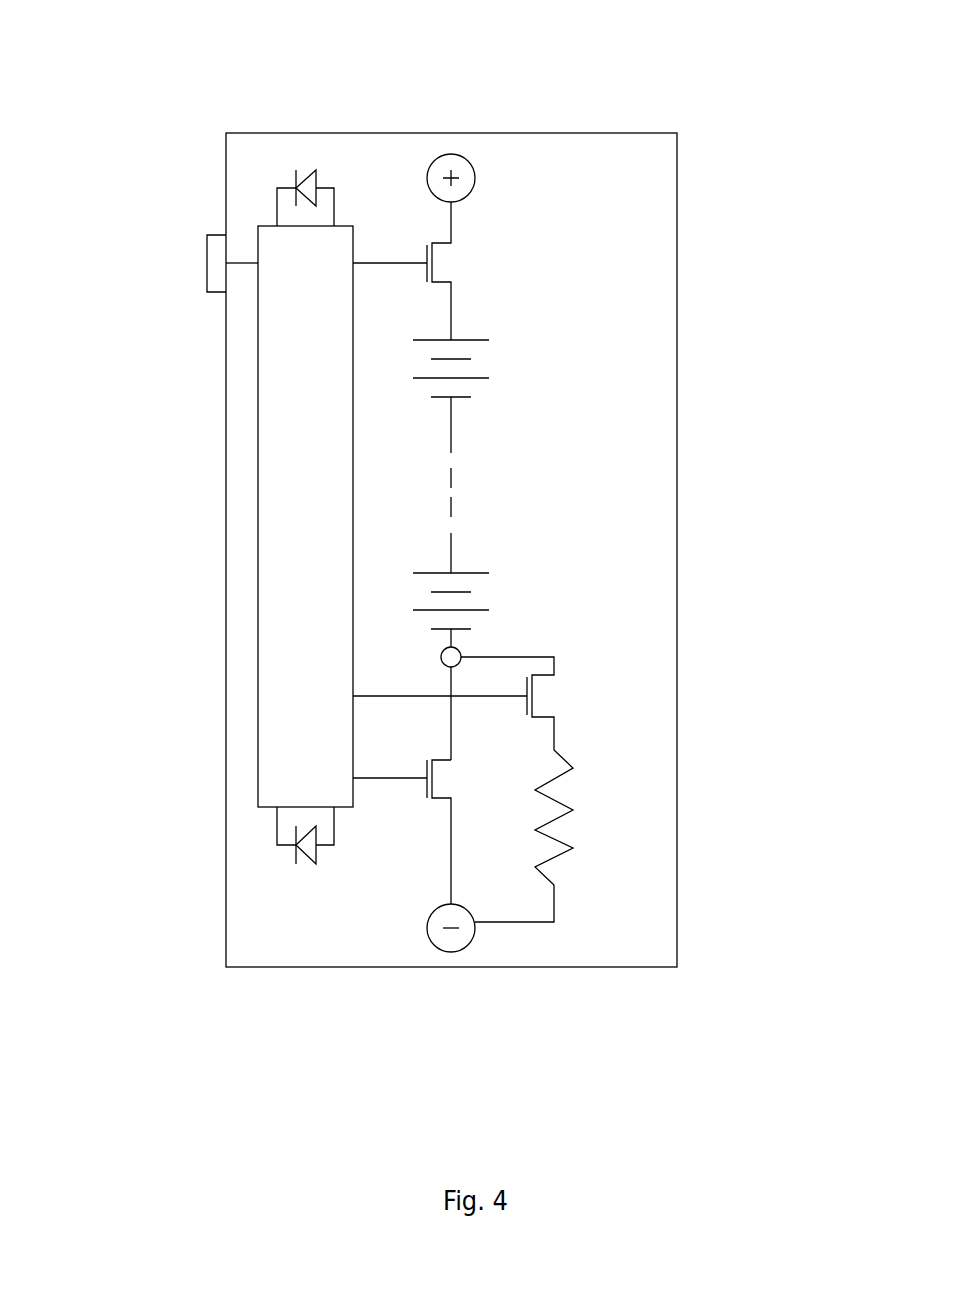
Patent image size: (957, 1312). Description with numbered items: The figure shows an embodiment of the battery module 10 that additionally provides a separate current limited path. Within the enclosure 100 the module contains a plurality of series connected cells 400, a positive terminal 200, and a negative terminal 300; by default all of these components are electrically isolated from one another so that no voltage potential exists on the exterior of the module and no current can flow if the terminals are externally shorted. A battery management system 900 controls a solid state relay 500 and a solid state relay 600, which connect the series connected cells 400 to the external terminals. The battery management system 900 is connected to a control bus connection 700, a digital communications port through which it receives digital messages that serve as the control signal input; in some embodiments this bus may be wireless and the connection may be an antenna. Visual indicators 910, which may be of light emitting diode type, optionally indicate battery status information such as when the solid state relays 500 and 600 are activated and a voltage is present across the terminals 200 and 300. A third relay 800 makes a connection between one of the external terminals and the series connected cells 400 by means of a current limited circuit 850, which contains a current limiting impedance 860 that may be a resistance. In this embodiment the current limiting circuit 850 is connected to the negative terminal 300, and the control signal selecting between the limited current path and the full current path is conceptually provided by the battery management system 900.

The battery module 10 is at (620, 133).
The enclosure 100 is at (629, 228).
The positive terminal 200 is at (442, 154).
The negative terminal 300 is at (445, 950).
The series connected cells 400 is at (498, 357).
The solid state relay 500 is at (423, 223).
The solid state relay 600 is at (427, 807).
The control bus connection 700 is at (207, 263).
The third relay 800 is at (575, 690).
The current limited circuit 850 is at (591, 768).
The current limiting impedance 860 is at (573, 847).
The battery management system 900 is at (297, 676).
The visual indicators 910 is at (282, 150).